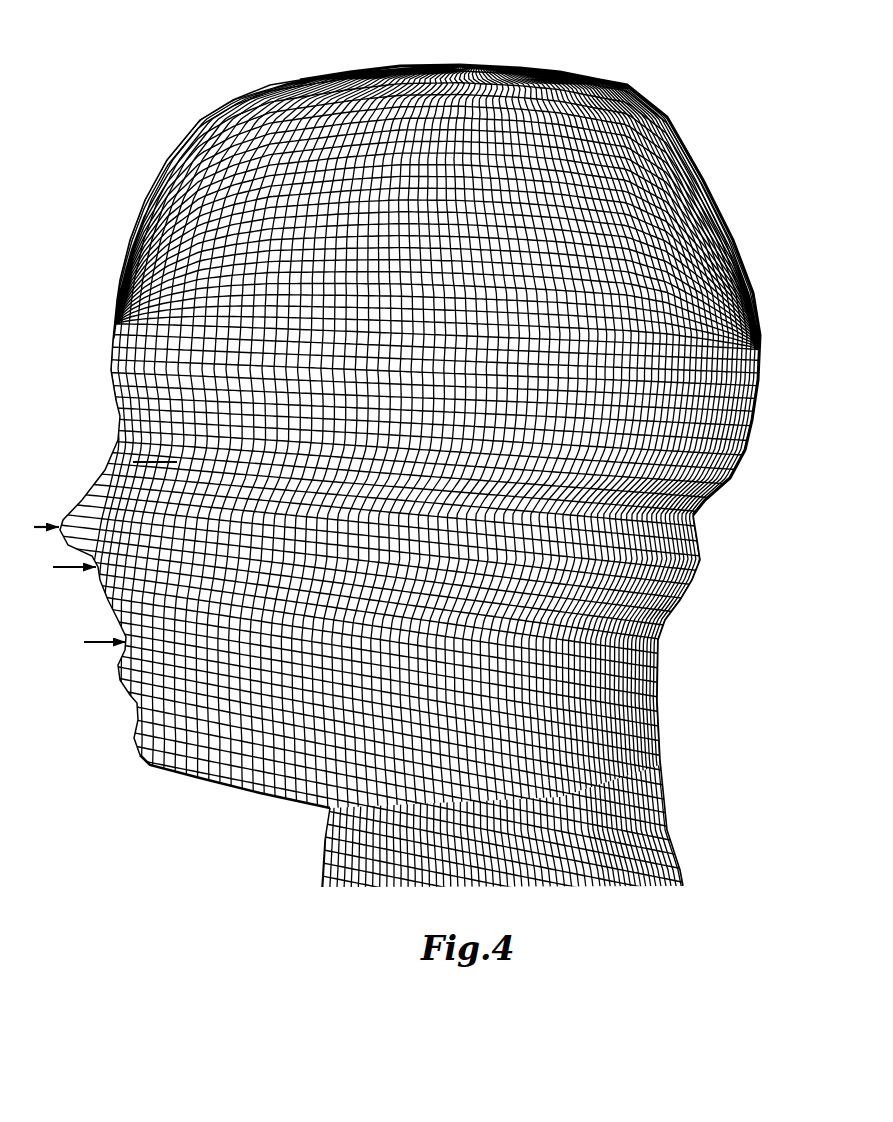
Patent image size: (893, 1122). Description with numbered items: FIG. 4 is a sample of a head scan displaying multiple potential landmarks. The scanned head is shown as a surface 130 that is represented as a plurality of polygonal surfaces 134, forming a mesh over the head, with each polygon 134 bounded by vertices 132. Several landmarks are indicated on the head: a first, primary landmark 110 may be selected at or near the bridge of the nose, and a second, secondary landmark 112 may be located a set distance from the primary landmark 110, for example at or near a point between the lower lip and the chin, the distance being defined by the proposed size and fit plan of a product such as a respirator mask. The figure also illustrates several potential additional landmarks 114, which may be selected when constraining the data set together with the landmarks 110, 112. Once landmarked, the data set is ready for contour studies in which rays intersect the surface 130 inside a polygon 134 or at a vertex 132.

The first landmark 110 is at (119, 415).
The second landmark 112 is at (136, 703).
The additional landmarks 114 is at (783, 295).
The surface 130 is at (678, 116).
The vertex 132 is at (83, 518).
The polygonal surfaces 134 is at (237, 133).